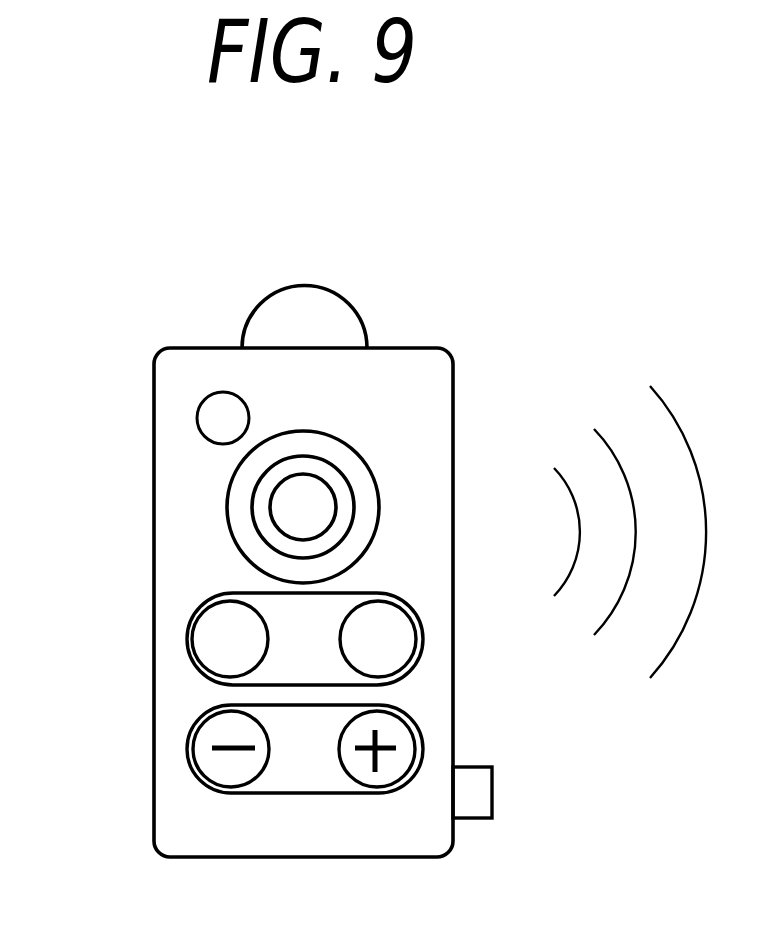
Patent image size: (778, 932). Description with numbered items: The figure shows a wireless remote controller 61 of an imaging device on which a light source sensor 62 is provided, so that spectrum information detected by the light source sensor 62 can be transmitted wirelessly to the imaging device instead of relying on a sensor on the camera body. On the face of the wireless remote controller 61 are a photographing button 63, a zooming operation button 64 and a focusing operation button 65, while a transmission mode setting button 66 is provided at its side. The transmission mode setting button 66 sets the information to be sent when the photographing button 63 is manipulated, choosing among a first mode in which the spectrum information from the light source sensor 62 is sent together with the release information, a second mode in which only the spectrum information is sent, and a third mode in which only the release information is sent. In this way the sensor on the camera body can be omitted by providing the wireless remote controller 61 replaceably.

The wireless remote controller 61 is at (503, 343).
The light source sensor 62 is at (297, 303).
The photographing button 63 is at (295, 493).
The zooming operation button 64 is at (193, 650).
The focusing operation button 65 is at (303, 772).
The transmission mode setting button 66 is at (472, 789).